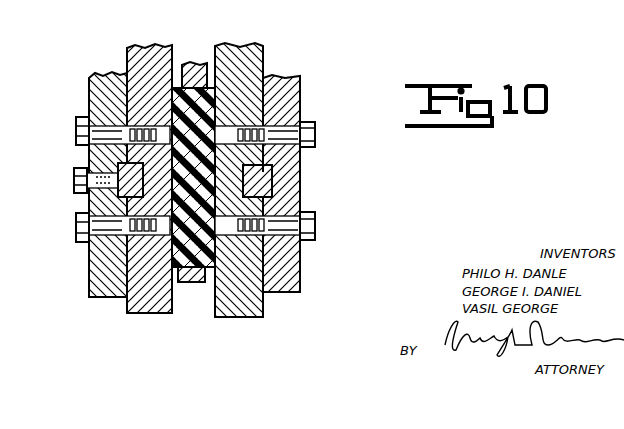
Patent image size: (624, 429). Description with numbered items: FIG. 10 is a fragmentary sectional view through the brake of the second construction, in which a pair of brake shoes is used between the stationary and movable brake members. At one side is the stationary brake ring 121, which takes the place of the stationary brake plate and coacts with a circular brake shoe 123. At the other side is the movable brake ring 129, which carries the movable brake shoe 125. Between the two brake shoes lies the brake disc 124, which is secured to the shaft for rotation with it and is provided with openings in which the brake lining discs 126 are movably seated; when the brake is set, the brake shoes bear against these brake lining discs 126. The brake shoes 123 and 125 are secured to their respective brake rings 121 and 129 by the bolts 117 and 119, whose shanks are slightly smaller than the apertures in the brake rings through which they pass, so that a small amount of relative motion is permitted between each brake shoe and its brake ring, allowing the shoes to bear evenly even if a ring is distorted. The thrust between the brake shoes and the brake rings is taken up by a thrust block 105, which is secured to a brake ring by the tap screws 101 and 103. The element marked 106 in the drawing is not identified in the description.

The tap screw 101 is at (275, 181).
The tap screw 103 is at (88, 205).
The thrust block 105 is at (300, 160).
The center bolt 106 is at (74, 174).
The bolt 117 is at (315, 133).
The bolt 119 is at (76, 128).
The brake ring 121 is at (300, 95).
The circular brake shoe 123 is at (240, 45).
The brake disc 124 is at (195, 62).
The movable brake shoe 125 is at (150, 45).
The brake lining disc 126 is at (215, 110).
The movable brake ring 129 is at (89, 100).